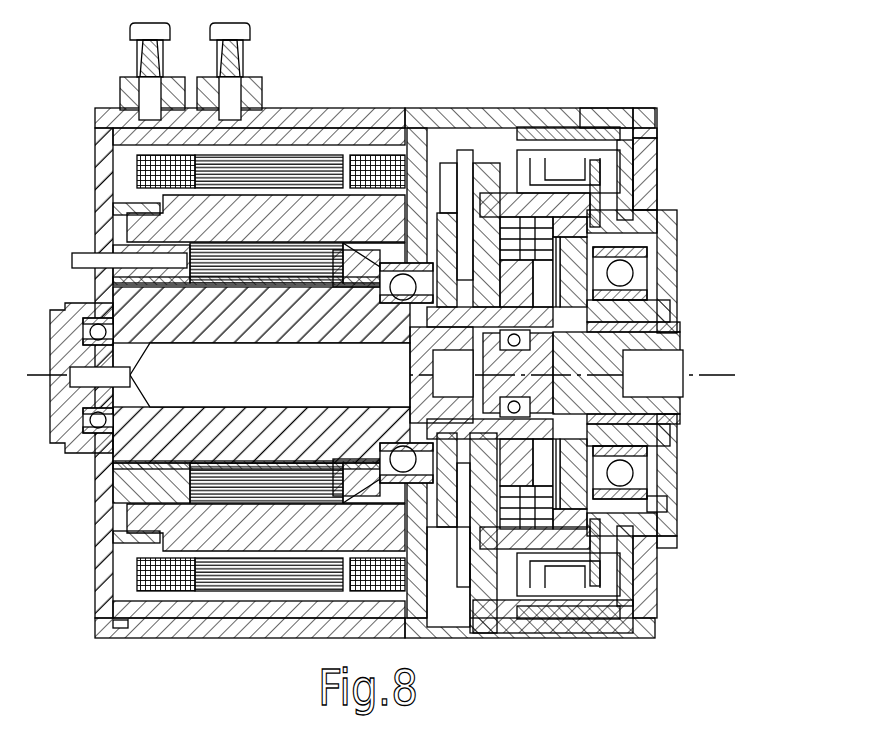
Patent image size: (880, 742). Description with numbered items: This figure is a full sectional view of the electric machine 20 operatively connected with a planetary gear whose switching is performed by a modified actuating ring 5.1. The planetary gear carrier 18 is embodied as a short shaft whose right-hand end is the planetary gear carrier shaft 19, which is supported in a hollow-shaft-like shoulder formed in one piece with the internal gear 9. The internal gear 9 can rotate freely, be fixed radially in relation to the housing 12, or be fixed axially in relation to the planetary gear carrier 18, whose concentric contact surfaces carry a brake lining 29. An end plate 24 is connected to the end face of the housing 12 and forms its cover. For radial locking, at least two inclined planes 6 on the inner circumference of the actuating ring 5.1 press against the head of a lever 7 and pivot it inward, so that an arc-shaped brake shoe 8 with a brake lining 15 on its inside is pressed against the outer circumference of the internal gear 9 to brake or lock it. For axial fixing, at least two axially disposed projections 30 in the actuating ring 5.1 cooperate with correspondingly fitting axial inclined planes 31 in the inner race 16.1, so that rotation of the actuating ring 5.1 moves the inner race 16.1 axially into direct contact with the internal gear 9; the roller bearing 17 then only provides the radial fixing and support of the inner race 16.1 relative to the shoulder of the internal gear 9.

The actuating ring 5.1 is at (576, 108).
The inclined plane 6 is at (612, 640).
The lever 7 is at (530, 108).
The brake shoe 8 is at (478, 108).
The internal gear 9 is at (640, 585).
The housing 12 is at (620, 108).
The brake lining 15 is at (658, 155).
The inner race 16.1 is at (678, 212).
The roller bearing 17 is at (620, 470).
The planetary gear carrier 18 is at (620, 278).
The planetary gear carrier shaft 19 is at (640, 340).
The electric machine 20 is at (130, 640).
The end plate 24 is at (657, 545).
The brake lining 29 is at (655, 505).
The projection 30 is at (653, 175).
The inclined plane 31 is at (656, 110).